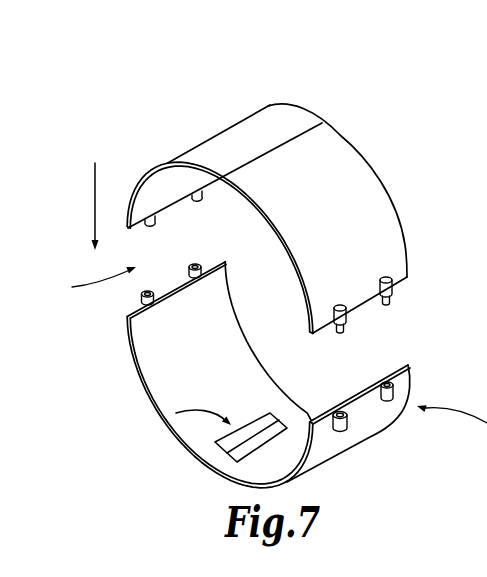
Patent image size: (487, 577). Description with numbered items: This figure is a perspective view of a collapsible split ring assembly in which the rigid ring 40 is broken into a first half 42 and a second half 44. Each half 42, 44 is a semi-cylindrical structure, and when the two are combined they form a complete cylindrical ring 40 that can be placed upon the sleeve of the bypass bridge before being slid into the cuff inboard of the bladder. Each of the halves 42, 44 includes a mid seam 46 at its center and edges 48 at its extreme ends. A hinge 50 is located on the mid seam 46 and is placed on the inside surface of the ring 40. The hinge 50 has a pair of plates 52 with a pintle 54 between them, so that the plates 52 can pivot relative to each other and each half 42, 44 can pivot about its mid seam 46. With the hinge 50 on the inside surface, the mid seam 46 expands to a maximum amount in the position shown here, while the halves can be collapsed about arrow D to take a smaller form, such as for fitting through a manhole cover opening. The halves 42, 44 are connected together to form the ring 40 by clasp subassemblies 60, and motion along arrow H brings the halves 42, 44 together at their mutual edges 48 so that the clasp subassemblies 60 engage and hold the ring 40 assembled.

The ring 40 is at (398, 176).
The first half 42 is at (363, 187).
The second half 44 is at (160, 356).
The mid seam 46 is at (298, 134).
The edges 48 is at (172, 288).
The hinge 50 is at (258, 388).
The plates 52 is at (215, 442).
The pintle 54 is at (244, 433).
The clasp subassembly 60 is at (486, 292).
The arrow H is at (95, 197).
The arrow D is at (178, 413).